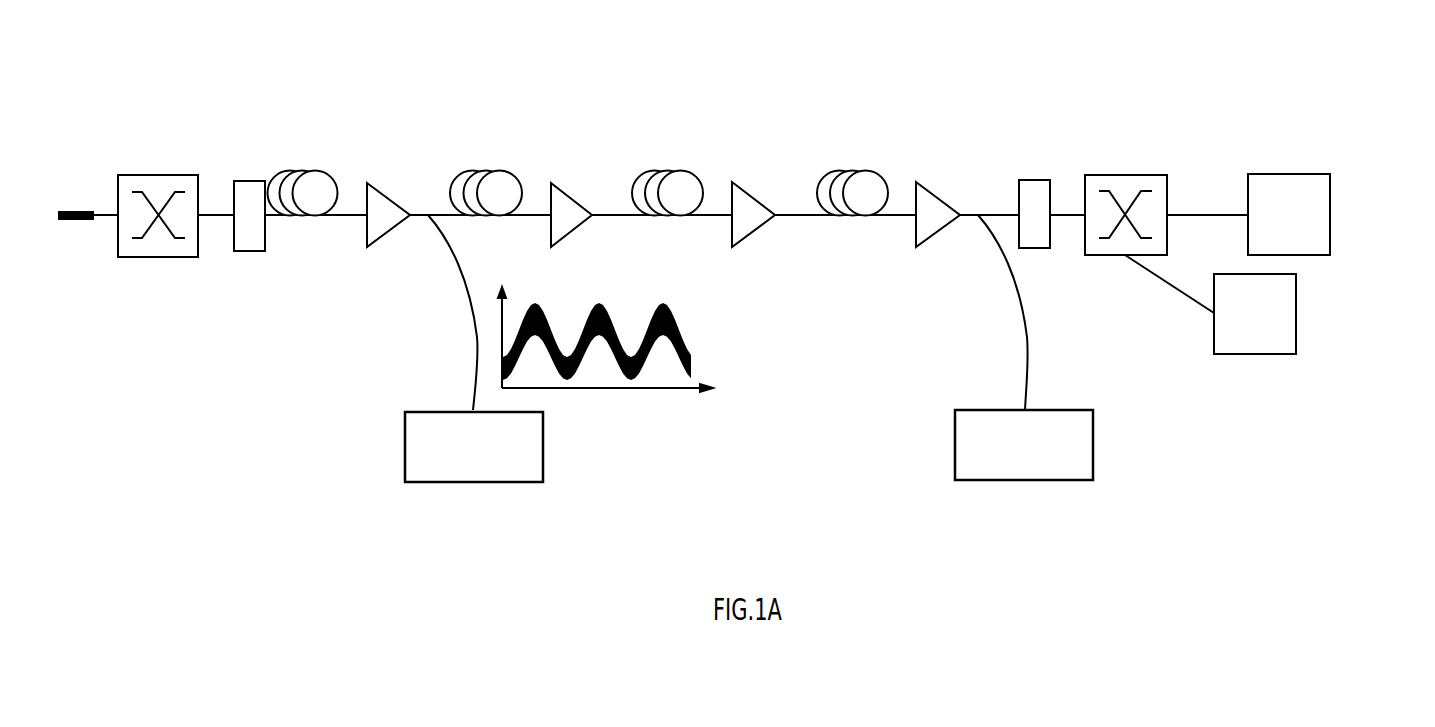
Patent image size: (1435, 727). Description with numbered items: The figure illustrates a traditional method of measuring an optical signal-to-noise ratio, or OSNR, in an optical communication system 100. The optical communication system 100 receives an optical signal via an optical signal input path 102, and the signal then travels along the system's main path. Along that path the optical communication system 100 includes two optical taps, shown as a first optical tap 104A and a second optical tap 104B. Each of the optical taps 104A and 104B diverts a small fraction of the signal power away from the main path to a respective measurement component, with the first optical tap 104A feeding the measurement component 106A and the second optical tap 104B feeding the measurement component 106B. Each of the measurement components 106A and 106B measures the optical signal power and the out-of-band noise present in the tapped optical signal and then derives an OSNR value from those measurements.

The optical communication system 100 is at (375, 53).
The optical signal input path 102 is at (77, 222).
The optical tap 104A is at (422, 222).
The optical tap 104B is at (972, 220).
The measurement component 106A is at (492, 482).
The measurement component 106B is at (1030, 480).